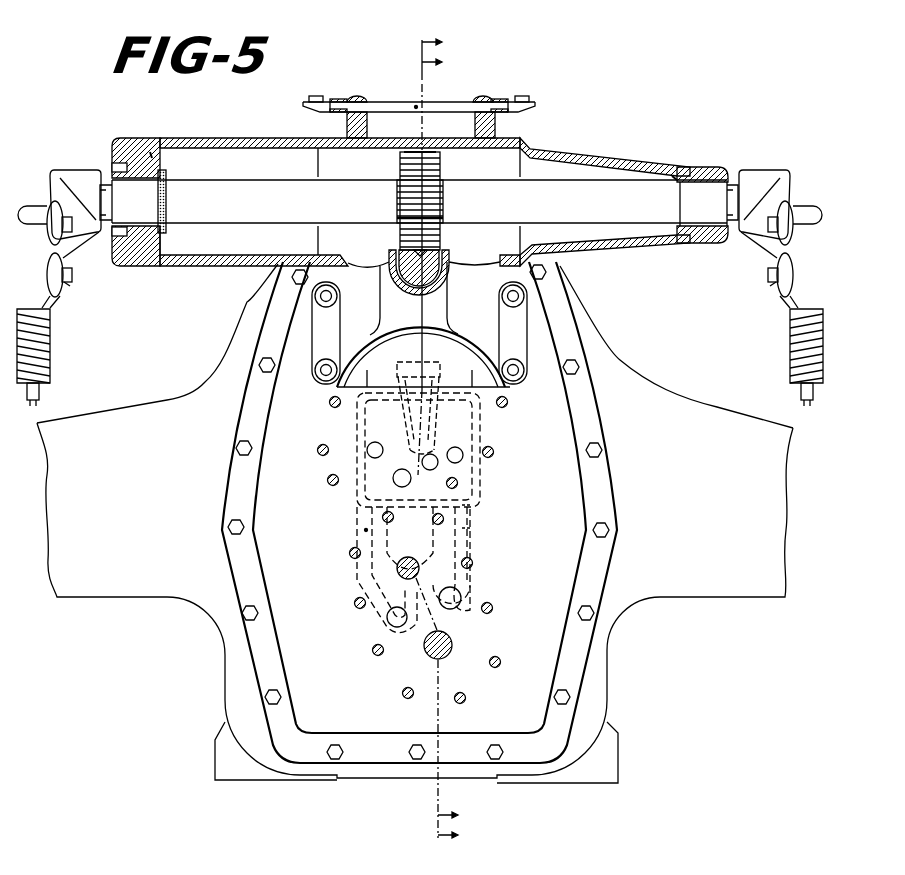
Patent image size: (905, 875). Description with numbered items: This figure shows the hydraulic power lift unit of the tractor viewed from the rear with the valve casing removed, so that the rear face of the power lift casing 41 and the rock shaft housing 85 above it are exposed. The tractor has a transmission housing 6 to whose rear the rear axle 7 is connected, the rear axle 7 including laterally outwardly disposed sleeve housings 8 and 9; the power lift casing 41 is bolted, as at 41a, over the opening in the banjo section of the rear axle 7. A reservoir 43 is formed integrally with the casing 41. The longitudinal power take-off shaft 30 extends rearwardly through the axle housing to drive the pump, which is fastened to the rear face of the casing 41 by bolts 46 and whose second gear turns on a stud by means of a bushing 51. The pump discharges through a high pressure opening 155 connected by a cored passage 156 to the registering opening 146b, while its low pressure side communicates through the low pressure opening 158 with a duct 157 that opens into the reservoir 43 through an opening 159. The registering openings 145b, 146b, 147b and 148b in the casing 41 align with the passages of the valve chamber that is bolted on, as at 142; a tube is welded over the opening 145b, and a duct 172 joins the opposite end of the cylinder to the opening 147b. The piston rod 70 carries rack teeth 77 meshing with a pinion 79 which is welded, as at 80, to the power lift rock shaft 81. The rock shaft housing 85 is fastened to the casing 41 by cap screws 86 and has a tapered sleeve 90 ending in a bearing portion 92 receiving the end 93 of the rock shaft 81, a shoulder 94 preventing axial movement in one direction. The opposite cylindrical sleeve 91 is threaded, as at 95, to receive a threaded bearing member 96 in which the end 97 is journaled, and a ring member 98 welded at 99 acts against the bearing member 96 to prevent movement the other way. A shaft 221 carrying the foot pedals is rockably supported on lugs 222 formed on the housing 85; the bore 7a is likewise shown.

The transmission housing 6 is at (433, 484).
The rear axle 7 is at (612, 344).
The bore chamber of housing 7a is at (419, 201).
The sleeve housing 8 is at (165, 403).
The sleeve housing 9 is at (690, 415).
The power take-off shaft 30 is at (448, 644).
The power lift casing 41 is at (534, 621).
The bolts 41a is at (266, 693).
The reservoir 43 is at (483, 492).
The bolts 46 is at (373, 648).
The bushing 51 is at (420, 568).
The piston rod 70 is at (443, 265).
The rack teeth 77 is at (432, 249).
The pinion 79 is at (422, 158).
The weld 80 is at (441, 184).
The power lift rock shaft 81 is at (597, 210).
The rock shaft housing 85 is at (382, 126).
The cap screws 86 is at (328, 361).
The tapered sleeve 90 is at (600, 157).
The cylindrical sleeve 91 is at (233, 143).
The bearing portion 92 is at (700, 168).
The rock shaft end 93 is at (713, 216).
The shoulder 94 is at (668, 178).
The threaded opening 95 is at (158, 157).
The threaded bearing member 96 is at (156, 265).
The rock shaft end 97 is at (152, 214).
The ring member 98 is at (158, 238).
The weld 99 is at (168, 197).
The bolts 142 is at (330, 479).
The registering opening 145b is at (396, 482).
The registering opening 146b is at (371, 453).
The registering opening 147b is at (436, 456).
The registering opening 148b is at (465, 457).
The high pressure opening 155 is at (397, 627).
The cored passage 156 is at (365, 530).
The duct 157 is at (472, 528).
The low pressure opening 158 is at (462, 598).
The opening 159 is at (472, 506).
The duct 172 is at (431, 421).
The shaft 221 is at (416, 105).
The lugs 222 is at (354, 97).